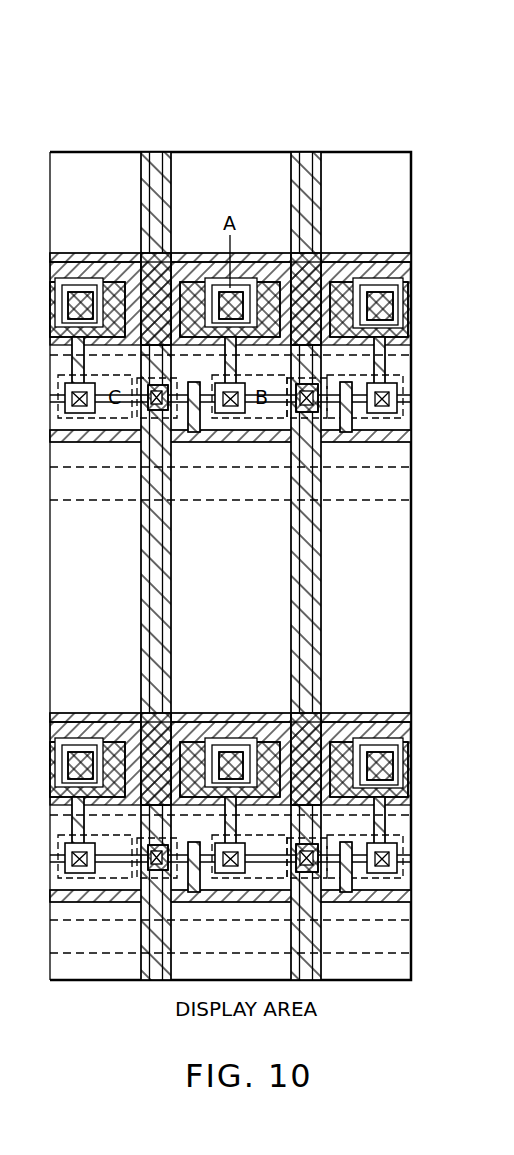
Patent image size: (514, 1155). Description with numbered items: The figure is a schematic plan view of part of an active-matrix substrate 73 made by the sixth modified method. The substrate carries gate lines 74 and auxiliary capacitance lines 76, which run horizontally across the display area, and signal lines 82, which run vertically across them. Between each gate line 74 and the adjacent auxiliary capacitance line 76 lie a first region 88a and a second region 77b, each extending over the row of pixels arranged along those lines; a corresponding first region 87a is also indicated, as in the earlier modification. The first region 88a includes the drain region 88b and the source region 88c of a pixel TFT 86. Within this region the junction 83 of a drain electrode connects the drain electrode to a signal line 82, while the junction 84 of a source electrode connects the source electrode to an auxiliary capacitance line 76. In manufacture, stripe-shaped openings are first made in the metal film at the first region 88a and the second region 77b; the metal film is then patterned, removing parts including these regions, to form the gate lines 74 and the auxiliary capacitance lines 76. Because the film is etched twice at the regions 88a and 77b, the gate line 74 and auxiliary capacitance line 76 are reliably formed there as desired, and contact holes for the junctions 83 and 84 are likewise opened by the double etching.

The active-matrix substrate 73 is at (225, 88).
The gate line 74 is at (405, 437).
The auxiliary capacitance line 76 is at (402, 268).
The second region 77b is at (405, 470).
The signal line 82 is at (152, 158).
The junction of drain electrode 83 is at (137, 407).
The junction of source electrode 84 is at (228, 420).
The pixel TFT 86 is at (186, 435).
The first region 87a is at (192, 521).
The first region 88a is at (403, 361).
The drain region 88b is at (48, 371).
The source region 88c is at (258, 419).